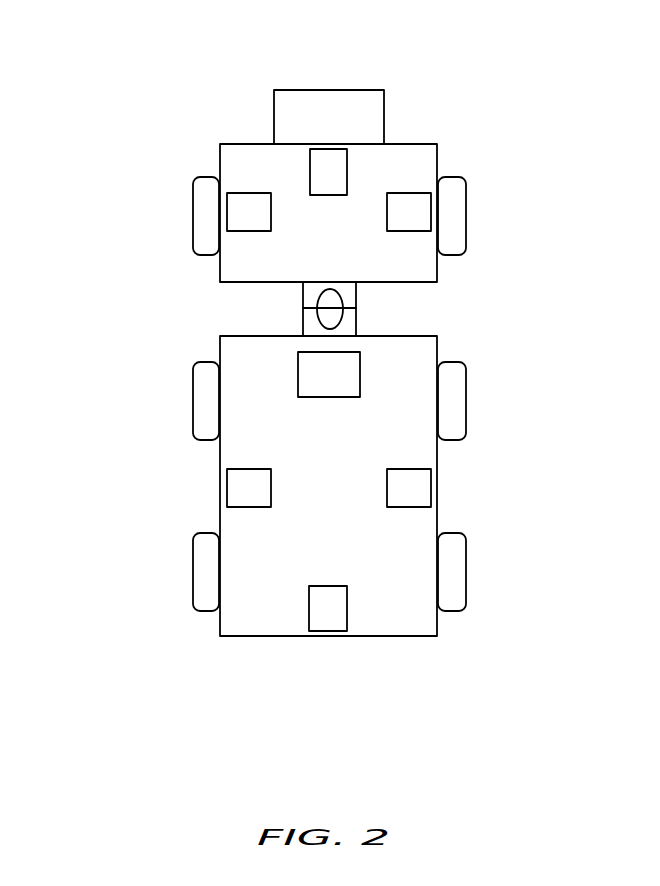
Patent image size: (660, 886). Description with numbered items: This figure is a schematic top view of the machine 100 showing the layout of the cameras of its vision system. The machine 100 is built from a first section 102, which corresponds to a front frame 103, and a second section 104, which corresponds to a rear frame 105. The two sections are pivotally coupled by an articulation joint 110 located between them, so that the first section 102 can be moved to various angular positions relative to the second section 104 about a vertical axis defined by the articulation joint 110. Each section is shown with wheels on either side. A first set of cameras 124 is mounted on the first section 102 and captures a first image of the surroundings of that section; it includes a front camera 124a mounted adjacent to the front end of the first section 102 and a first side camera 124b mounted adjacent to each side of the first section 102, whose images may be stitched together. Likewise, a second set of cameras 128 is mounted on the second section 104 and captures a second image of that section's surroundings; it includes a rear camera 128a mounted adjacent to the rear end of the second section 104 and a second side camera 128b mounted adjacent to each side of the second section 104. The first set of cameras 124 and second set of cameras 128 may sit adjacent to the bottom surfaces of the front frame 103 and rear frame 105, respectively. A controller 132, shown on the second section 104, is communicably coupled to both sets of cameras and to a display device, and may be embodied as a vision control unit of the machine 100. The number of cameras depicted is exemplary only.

The machine 100 is at (546, 87).
The first section 102 is at (123, 90).
The front frame 103 is at (343, 259).
The second section 104 is at (123, 308).
The rear frame 105 is at (342, 486).
The articulation joint 110 is at (343, 295).
The first set of cameras 124 is at (399, 129).
The front camera 124a is at (328, 164).
The first side camera 124b is at (248, 200).
The second set of cameras 128 is at (379, 649).
The rear camera 128a is at (329, 617).
The second side camera 128b is at (238, 488).
The controller 132 is at (344, 387).